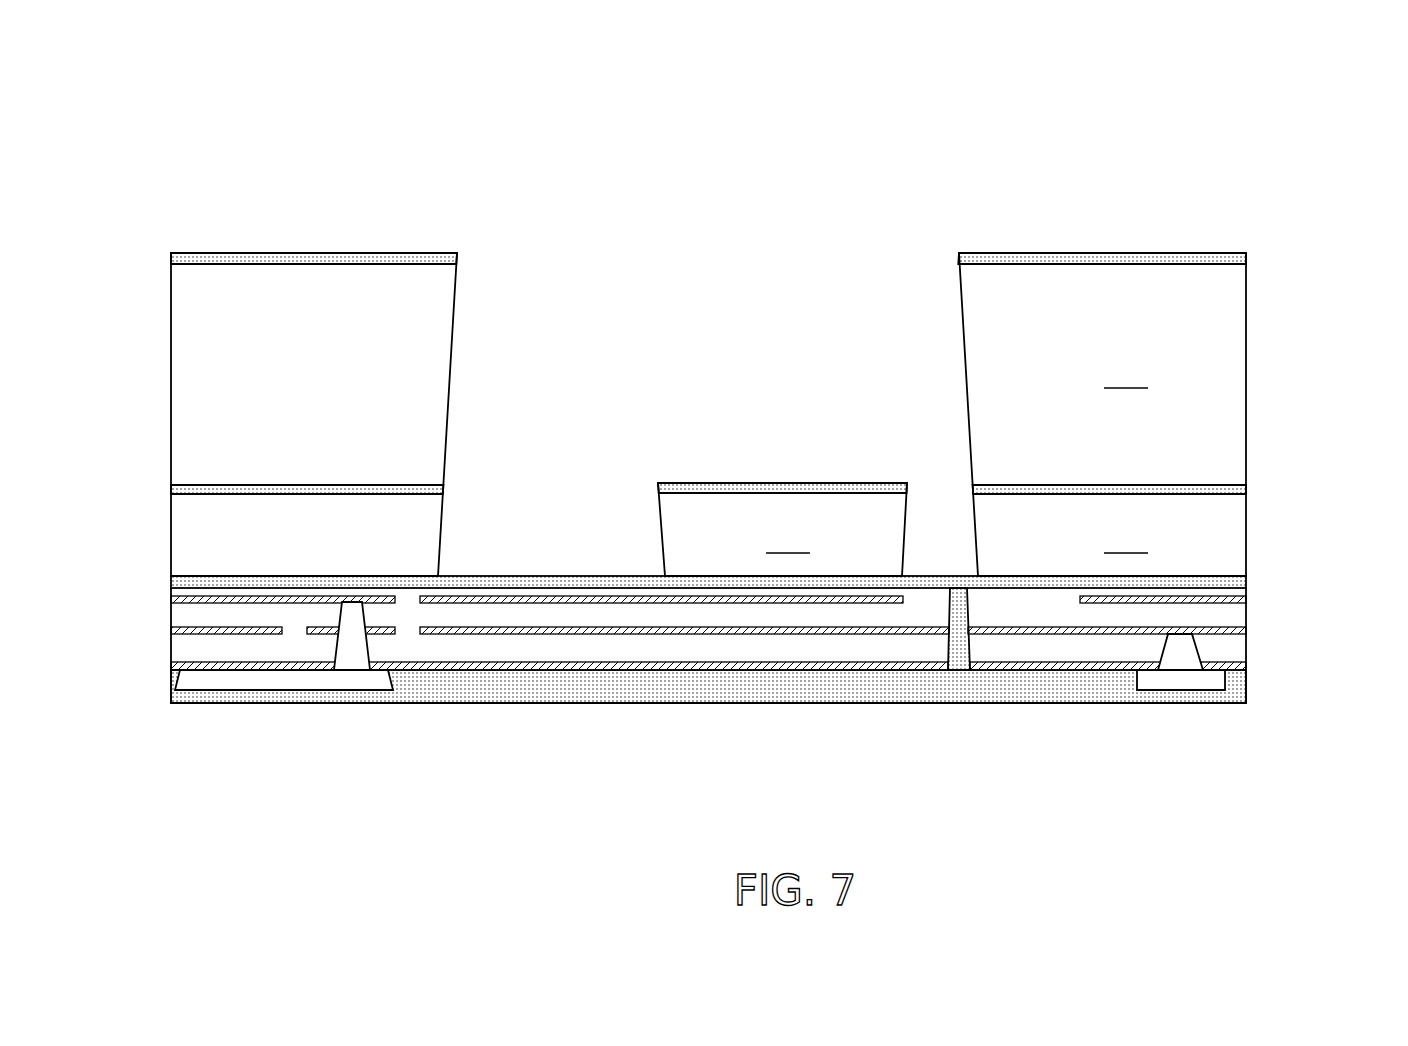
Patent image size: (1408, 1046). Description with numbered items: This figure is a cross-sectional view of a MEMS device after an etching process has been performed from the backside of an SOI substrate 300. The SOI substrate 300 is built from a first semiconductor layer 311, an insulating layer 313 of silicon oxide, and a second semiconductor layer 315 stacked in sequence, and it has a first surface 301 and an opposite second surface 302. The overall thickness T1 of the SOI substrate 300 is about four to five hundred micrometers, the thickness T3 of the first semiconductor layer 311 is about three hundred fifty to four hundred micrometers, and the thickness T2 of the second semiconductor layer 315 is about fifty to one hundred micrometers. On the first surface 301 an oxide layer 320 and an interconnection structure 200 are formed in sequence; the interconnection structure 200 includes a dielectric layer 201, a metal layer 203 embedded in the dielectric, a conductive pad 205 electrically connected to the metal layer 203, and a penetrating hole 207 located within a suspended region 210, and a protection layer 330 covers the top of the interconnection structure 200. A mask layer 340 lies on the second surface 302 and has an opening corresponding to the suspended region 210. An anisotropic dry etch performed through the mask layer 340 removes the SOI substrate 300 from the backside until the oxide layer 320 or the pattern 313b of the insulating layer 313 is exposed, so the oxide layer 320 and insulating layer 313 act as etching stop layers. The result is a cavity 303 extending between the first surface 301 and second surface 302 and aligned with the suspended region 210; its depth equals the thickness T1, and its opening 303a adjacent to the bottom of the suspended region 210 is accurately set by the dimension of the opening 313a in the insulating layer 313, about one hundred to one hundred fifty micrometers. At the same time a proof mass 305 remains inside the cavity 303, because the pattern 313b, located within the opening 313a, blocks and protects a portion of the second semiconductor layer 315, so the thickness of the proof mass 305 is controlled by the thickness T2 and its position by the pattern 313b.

The interconnection structure 200 is at (1319, 587).
The dielectric layer 201 is at (180, 641).
The metal layer 203 is at (172, 664).
The conductive pad 205 is at (352, 668).
The penetrating hole 207 is at (965, 682).
The suspended region 210 is at (1012, 740).
The SOI substrate 300 is at (104, 254).
The first surface 301 is at (1200, 577).
The second surface 302 is at (223, 265).
The cavity 303 is at (785, 285).
The opening of the cavity 303a is at (438, 485).
The proof mass 305 is at (782, 529).
The first semiconductor layer 311 is at (178, 376).
The insulating layer 313 is at (171, 490).
The opening 313a is at (445, 347).
The pattern 313b is at (724, 487).
The second semiconductor layer 315 is at (178, 528).
The oxide layer 320 is at (171, 582).
The protection layer 330 is at (171, 698).
The mask layer 340 is at (171, 258).
The thickness of the SOI substrate T1 is at (1398, 263).
The thickness of the second semiconductor layer T2 is at (650, 576).
The thickness of the first semiconductor layer T3 is at (1362, 483).